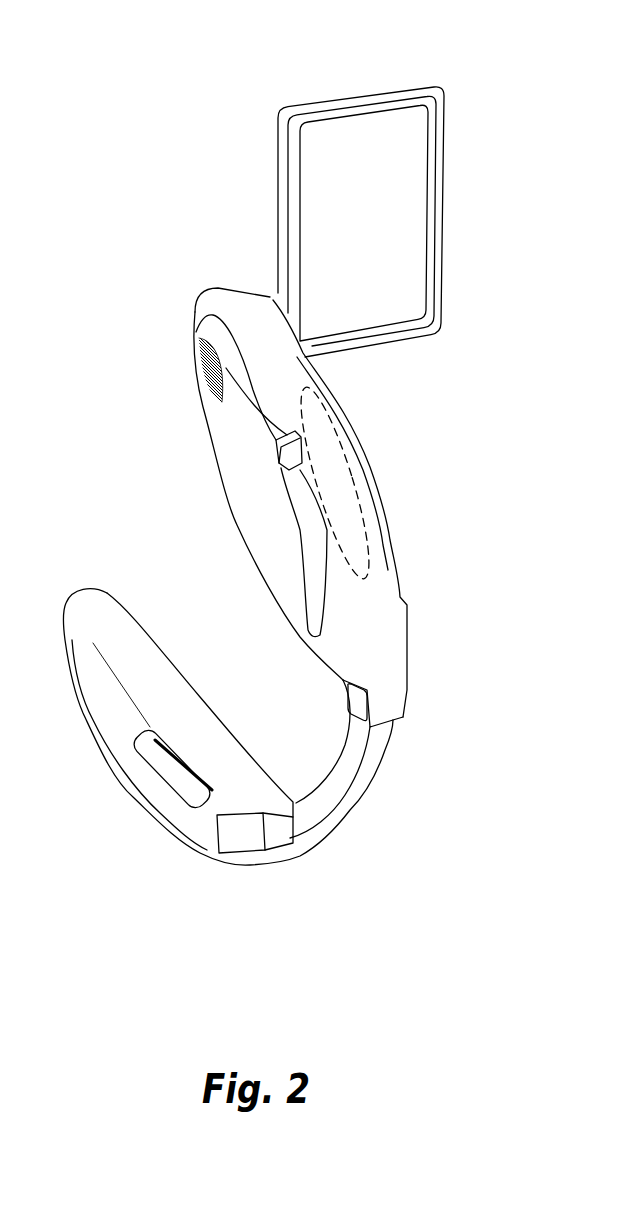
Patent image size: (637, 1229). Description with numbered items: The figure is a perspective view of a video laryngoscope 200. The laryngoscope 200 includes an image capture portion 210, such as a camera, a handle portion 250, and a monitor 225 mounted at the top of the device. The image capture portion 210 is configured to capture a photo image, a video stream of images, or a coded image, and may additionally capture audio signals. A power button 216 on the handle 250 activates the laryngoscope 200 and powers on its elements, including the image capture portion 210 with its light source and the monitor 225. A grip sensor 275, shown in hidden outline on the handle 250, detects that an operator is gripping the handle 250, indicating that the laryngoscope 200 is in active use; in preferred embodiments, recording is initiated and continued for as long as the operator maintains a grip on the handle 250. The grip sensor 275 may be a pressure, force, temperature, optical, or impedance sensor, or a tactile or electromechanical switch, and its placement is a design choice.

The laryngoscope 200 is at (147, 88).
The monitor 225 is at (443, 164).
The power button 216 is at (193, 370).
The handle portion 250 is at (237, 525).
The grip sensor 275 is at (348, 500).
The image capture portion 210 is at (217, 833).